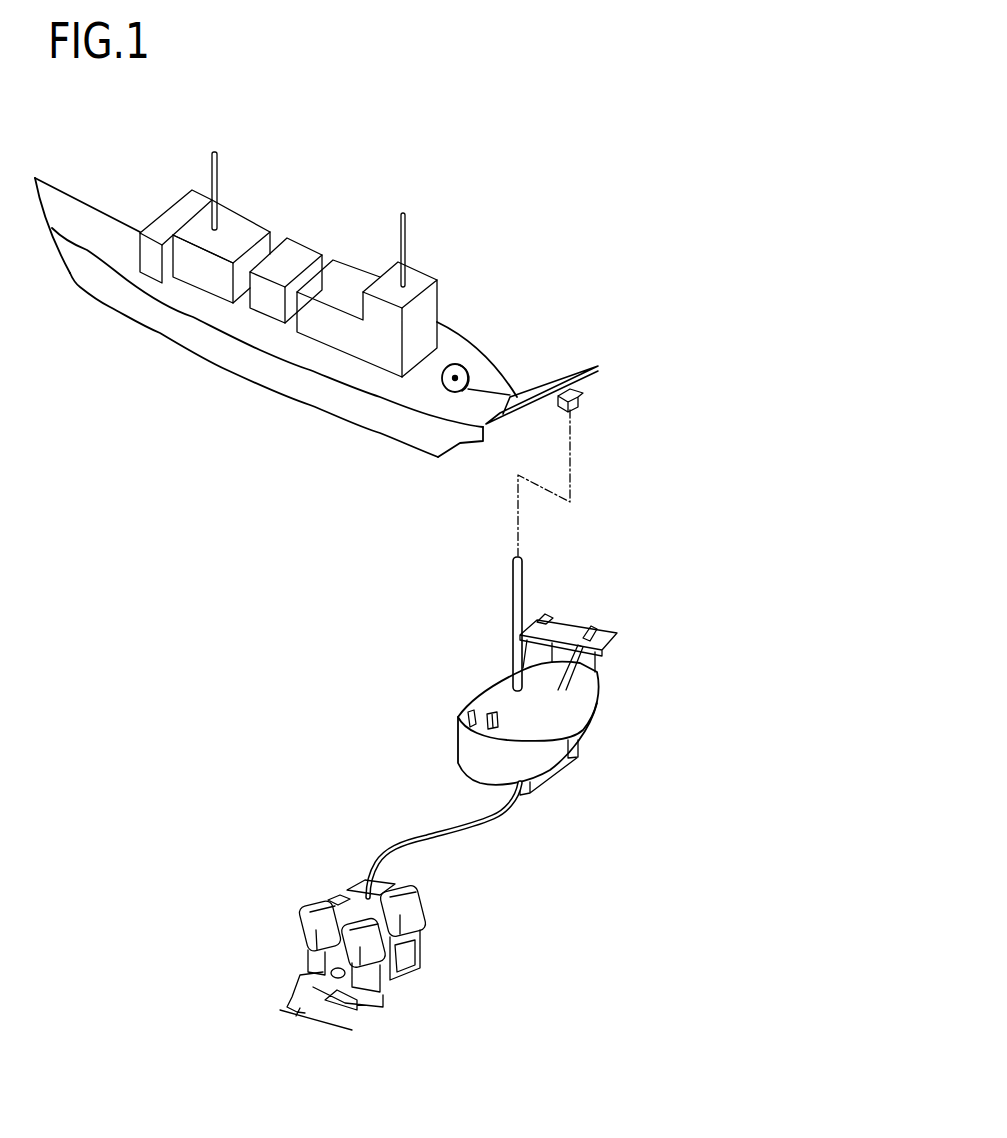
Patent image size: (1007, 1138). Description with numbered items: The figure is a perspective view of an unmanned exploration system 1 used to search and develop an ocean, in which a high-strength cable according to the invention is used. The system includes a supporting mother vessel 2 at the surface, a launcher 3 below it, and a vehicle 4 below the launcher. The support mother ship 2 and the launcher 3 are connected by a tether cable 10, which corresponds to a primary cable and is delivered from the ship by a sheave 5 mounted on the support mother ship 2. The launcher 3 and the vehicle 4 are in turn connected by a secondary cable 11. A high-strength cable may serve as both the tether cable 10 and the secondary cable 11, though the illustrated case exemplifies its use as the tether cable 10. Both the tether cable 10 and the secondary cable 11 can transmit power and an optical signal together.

The unmanned exploration system 1 is at (675, 107).
The supporting mother vessel 2 is at (283, 375).
The launcher 3 is at (588, 705).
The vehicle 4 is at (423, 953).
The sheave 5 is at (473, 372).
The tether cable 10 is at (523, 580).
The secondary cable 11 is at (513, 835).